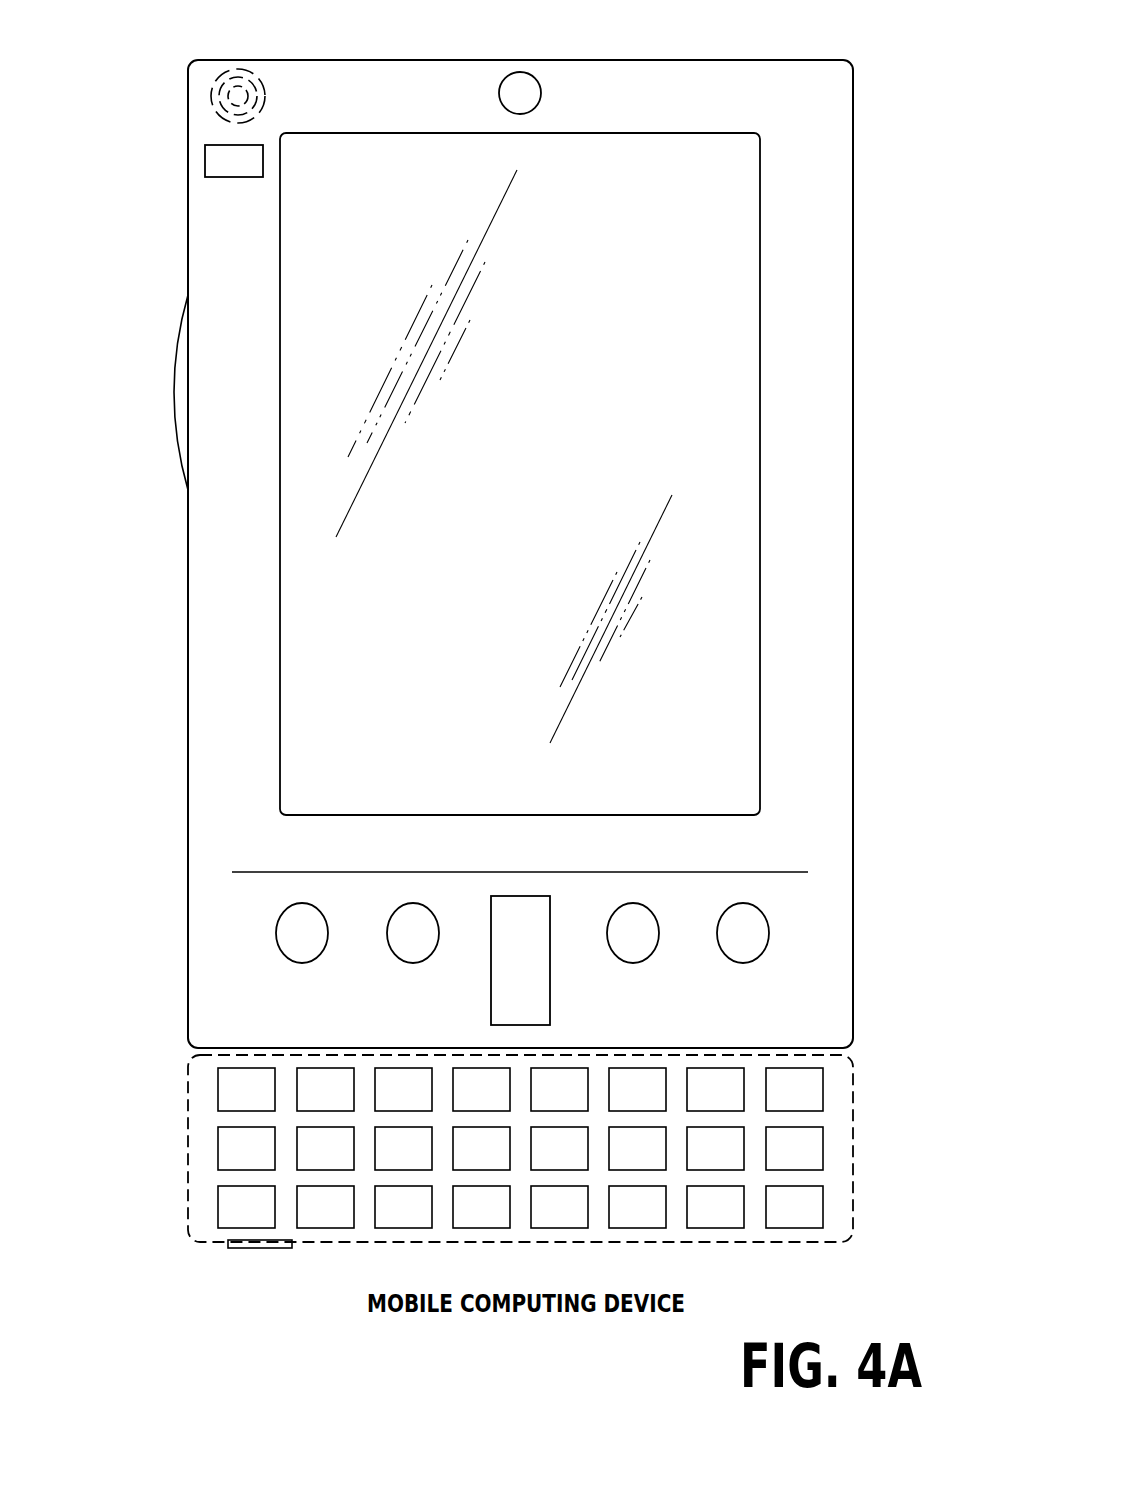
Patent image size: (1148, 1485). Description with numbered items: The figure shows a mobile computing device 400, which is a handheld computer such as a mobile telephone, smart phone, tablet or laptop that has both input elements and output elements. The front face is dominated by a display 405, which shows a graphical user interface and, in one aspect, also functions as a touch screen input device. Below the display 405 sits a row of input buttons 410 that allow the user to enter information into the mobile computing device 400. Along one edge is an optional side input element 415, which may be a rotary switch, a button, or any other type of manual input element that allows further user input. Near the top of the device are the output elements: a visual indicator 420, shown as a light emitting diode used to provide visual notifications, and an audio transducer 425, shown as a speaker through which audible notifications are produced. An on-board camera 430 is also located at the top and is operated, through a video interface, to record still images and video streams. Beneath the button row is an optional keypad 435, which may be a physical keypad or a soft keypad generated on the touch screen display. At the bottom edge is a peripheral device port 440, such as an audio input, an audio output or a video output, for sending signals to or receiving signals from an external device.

The mobile computing device 400 is at (817, 57).
The display 405 is at (303, 650).
The input buttons 410 is at (302, 964).
The side input element 415 is at (168, 393).
The visual indicator 420 is at (205, 160).
The audio transducer 425 is at (210, 97).
The on-board camera 430 is at (520, 72).
The keypad 435 is at (198, 1147).
The peripheral device port 440 is at (236, 1252).